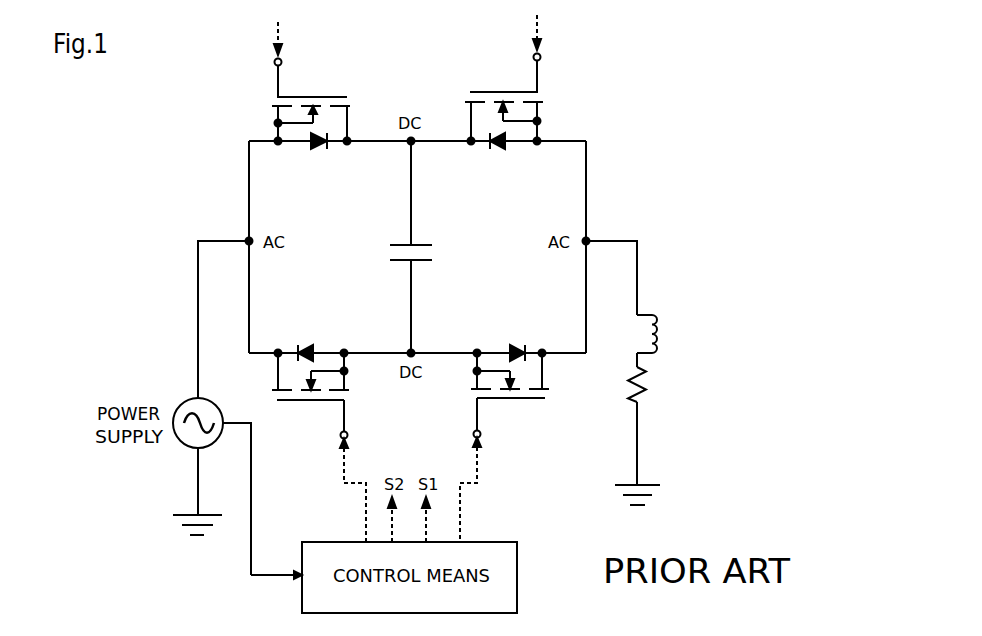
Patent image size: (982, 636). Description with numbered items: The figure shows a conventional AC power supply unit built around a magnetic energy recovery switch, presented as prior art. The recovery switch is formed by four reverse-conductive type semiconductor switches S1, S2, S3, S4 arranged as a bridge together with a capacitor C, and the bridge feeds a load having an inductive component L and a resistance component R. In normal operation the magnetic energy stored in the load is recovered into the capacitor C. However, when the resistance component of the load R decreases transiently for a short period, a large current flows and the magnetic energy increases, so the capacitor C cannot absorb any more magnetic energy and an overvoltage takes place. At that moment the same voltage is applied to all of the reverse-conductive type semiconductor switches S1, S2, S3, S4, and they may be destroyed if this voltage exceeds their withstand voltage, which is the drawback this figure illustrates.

The reverse-conductive type semiconductor switch S1 is at (504, 82).
The reverse-conductive type semiconductor switch S2 is at (311, 85).
The reverse-conductive type semiconductor switch S3 is at (319, 443).
The reverse-conductive type semiconductor switch S4 is at (504, 443).
The capacitor C is at (419, 249).
The inductor L is at (634, 334).
The load R is at (622, 385).